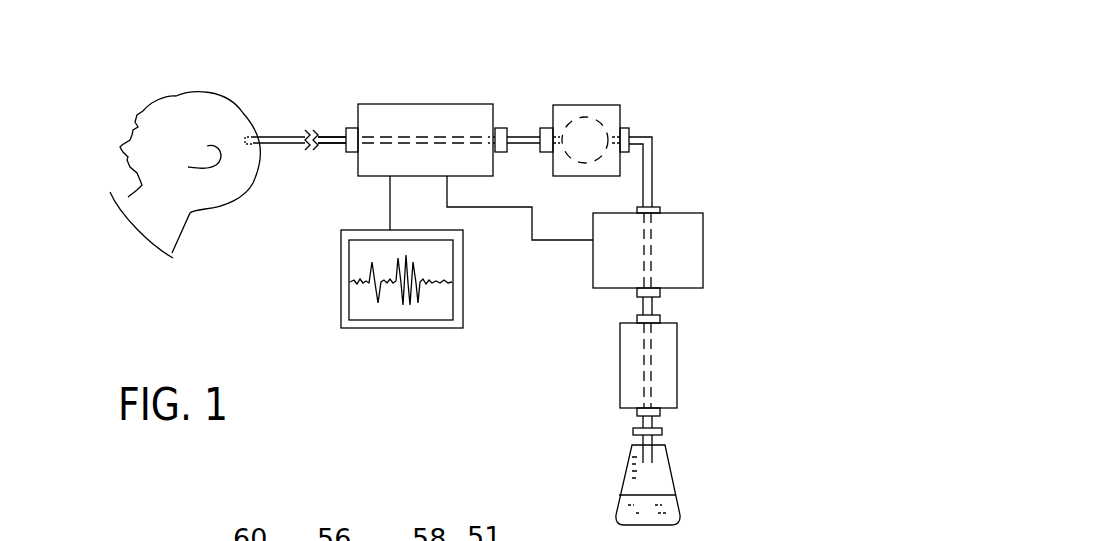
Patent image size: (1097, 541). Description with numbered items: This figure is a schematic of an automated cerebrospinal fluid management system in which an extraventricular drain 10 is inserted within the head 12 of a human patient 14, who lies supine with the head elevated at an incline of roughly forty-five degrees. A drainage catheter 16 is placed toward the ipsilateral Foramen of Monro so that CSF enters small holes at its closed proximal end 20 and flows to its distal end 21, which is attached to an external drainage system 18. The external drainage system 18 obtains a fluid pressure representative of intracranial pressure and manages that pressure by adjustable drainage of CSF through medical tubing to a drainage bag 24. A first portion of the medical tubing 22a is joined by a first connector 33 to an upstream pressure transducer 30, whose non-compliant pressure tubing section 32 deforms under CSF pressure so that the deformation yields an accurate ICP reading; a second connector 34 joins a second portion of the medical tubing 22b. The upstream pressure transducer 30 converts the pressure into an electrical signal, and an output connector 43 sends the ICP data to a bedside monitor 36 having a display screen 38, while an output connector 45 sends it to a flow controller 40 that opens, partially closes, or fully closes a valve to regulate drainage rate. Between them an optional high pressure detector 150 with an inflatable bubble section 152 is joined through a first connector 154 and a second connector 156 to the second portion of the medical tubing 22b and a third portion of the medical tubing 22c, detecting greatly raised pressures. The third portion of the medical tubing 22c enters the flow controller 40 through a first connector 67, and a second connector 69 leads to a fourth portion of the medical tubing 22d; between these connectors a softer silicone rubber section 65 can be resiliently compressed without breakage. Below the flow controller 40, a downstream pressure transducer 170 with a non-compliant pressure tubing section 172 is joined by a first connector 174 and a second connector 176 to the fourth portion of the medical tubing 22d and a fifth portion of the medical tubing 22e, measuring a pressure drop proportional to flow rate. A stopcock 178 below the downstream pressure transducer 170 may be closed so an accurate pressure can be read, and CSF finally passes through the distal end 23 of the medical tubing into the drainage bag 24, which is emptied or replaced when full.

The extraventricular drain 10 is at (135, 51).
The head 12 is at (230, 118).
The human patient 14 is at (155, 100).
The drainage catheter 16 is at (285, 135).
The external drainage system 18 is at (784, 105).
The proximal end 20 is at (260, 150).
The distal end 21 is at (291, 145).
The first portion of the medical tubing 22a is at (336, 132).
The second portion of the medical tubing 22b is at (523, 133).
The third portion of the medical tubing 22c is at (653, 153).
The fourth portion of the medical tubing 22d is at (657, 315).
The fifth portion of the medical tubing 22e is at (652, 437).
The distal end of the medical tubing 23 is at (642, 453).
The drainage bag 24 is at (660, 478).
The upstream pressure transducer 30 is at (405, 110).
The non-compliant pressure tubing section 32 is at (452, 137).
The first connector 33 is at (341, 130).
The second connector 34 is at (503, 128).
The bedside monitor 36 is at (423, 328).
The display screen 38 is at (358, 298).
The flow controller 40 is at (693, 248).
The output connector 43 is at (388, 197).
The output connector 45 is at (499, 213).
The softer silicone rubber section 65 is at (653, 245).
The first connector 67 is at (660, 210).
The second connector 69 is at (658, 297).
The high pressure detector 150 is at (615, 107).
The inflatable bubble section 152 is at (590, 125).
The first connector 154 is at (546, 133).
The second connector 156 is at (627, 128).
The downstream pressure transducer 170 is at (677, 357).
The non-compliant pressure tubing section 172 is at (650, 395).
The first connector 174 is at (658, 318).
The second connector 176 is at (660, 413).
The stopcock 178 is at (638, 433).